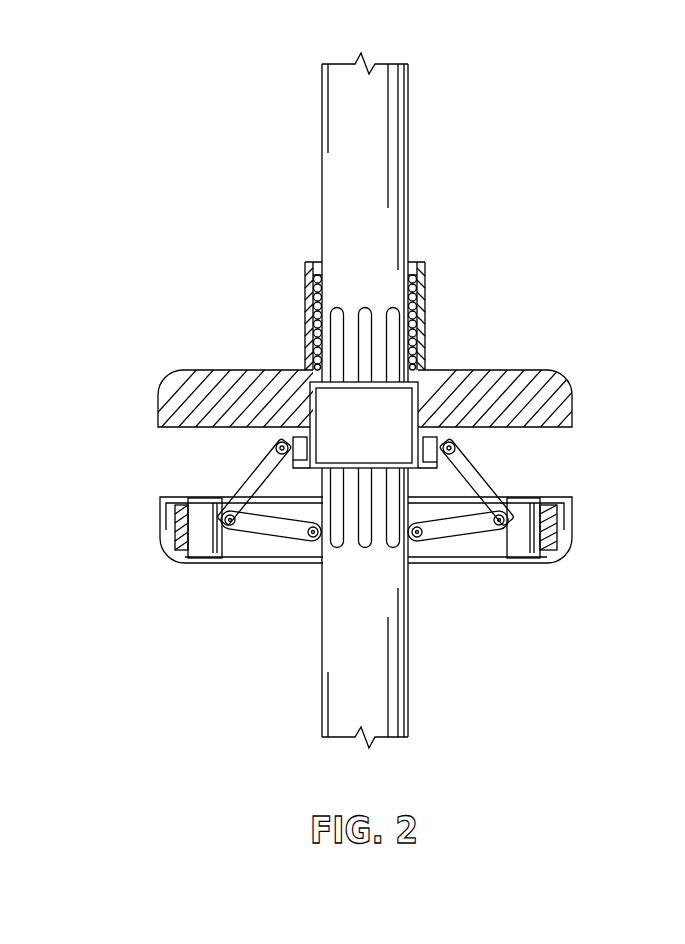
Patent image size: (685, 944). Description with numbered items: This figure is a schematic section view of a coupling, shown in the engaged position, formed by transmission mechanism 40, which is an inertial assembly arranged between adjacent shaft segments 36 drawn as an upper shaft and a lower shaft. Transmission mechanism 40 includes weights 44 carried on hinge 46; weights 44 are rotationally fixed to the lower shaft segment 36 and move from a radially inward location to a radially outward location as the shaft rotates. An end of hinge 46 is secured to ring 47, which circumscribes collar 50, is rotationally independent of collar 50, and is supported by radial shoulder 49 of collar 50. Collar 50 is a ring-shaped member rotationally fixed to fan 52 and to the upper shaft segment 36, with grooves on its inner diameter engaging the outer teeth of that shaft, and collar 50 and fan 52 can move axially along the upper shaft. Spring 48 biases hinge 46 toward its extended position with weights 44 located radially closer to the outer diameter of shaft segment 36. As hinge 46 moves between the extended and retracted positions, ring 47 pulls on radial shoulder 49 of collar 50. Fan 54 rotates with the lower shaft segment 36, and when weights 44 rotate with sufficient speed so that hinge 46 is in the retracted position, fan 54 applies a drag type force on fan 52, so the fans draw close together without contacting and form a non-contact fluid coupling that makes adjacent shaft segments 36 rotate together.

The shaft segment 36 is at (337, 181).
The transmission mechanism 40 is at (140, 482).
The weights 44 is at (205, 548).
The hinge 46 is at (285, 530).
The ring 47 is at (298, 437).
The spring 48 is at (315, 300).
The radial shoulder 49 is at (300, 485).
The collar 50 is at (305, 336).
The fan 52 is at (565, 393).
The fan 54 is at (572, 527).